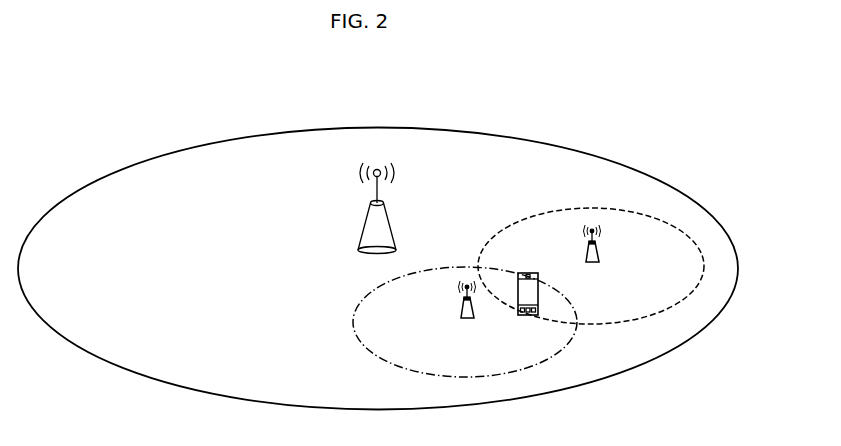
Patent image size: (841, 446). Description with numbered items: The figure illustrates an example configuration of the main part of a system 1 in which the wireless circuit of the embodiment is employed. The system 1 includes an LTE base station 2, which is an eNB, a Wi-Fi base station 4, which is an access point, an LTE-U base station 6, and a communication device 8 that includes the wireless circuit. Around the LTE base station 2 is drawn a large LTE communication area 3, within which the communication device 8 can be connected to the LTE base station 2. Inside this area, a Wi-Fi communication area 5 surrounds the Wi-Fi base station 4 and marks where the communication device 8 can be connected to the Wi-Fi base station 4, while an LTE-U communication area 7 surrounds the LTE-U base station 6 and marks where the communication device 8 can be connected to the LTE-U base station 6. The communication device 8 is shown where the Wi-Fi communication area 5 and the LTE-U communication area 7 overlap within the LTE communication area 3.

The system 1 is at (643, 107).
The LTE base station 2 is at (392, 228).
The LTE communication area 3 is at (551, 144).
The Wi-Fi base station 4 is at (462, 318).
The Wi-Fi communication area 5 is at (353, 320).
The LTE-U base station 6 is at (596, 262).
The LTE-U communication area 7 is at (598, 208).
The communication device 8 is at (538, 275).